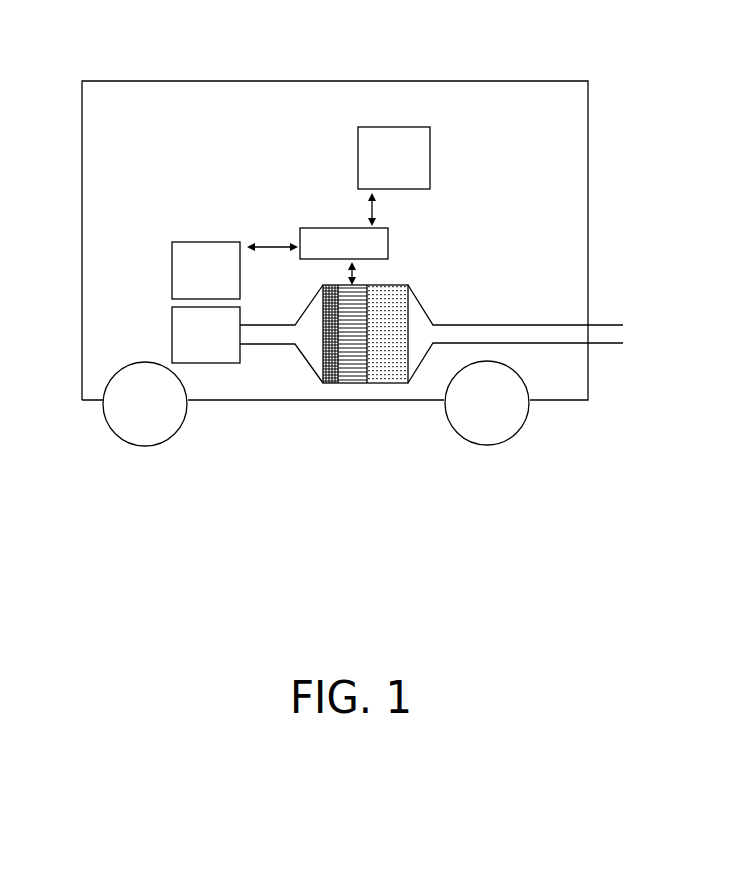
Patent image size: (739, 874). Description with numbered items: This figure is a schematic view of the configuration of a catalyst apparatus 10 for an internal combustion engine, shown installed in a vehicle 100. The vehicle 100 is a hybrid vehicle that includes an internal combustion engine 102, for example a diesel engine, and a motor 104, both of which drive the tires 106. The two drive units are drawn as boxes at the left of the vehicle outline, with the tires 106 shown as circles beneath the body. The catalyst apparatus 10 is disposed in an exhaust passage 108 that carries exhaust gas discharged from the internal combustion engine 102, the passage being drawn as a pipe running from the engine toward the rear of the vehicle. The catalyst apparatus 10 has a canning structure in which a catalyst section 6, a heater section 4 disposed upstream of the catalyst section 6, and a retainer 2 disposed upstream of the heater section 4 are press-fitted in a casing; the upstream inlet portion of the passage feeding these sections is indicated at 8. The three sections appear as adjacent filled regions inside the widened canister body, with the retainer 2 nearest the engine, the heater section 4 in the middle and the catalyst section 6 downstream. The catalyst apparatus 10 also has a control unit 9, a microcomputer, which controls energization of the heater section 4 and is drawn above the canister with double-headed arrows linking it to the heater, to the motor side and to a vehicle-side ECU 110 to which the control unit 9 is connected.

The vehicle 100 is at (576, 57).
The internal combustion engine 102 is at (167, 337).
The motor 104 is at (167, 269).
The tires 106 is at (153, 438).
The exhaust passage 108 is at (603, 347).
The vehicle-side ECU 110 is at (430, 157).
The control unit 9 is at (388, 247).
The exhaust pipe inlet 8 is at (298, 357).
The catalyst apparatus 10 is at (337, 416).
The retainer 2 is at (331, 377).
The heater section 4 is at (352, 378).
The catalyst section 6 is at (386, 373).